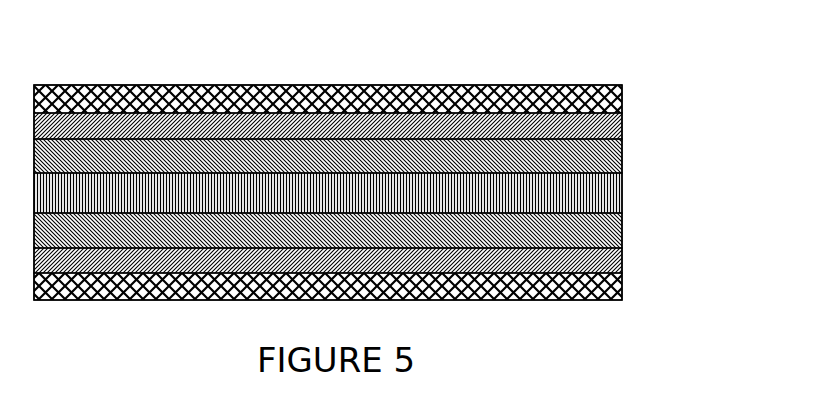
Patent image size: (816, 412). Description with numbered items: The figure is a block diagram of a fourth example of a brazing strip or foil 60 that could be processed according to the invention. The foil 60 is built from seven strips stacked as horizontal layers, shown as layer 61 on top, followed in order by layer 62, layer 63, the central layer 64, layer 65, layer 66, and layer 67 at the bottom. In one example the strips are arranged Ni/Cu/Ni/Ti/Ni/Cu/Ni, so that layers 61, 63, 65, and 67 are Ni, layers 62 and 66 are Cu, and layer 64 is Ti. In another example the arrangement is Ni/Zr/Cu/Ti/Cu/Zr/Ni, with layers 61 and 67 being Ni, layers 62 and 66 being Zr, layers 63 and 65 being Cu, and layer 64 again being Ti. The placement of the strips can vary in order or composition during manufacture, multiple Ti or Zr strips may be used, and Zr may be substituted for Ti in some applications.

The brazing strip or foil 60 is at (180, 78).
The layer 61 is at (622, 86).
The layer 62 is at (622, 127).
The layer 63 is at (622, 157).
The layer 64 is at (622, 193).
The layer 65 is at (622, 232).
The layer 66 is at (622, 268).
The layer 67 is at (622, 287).